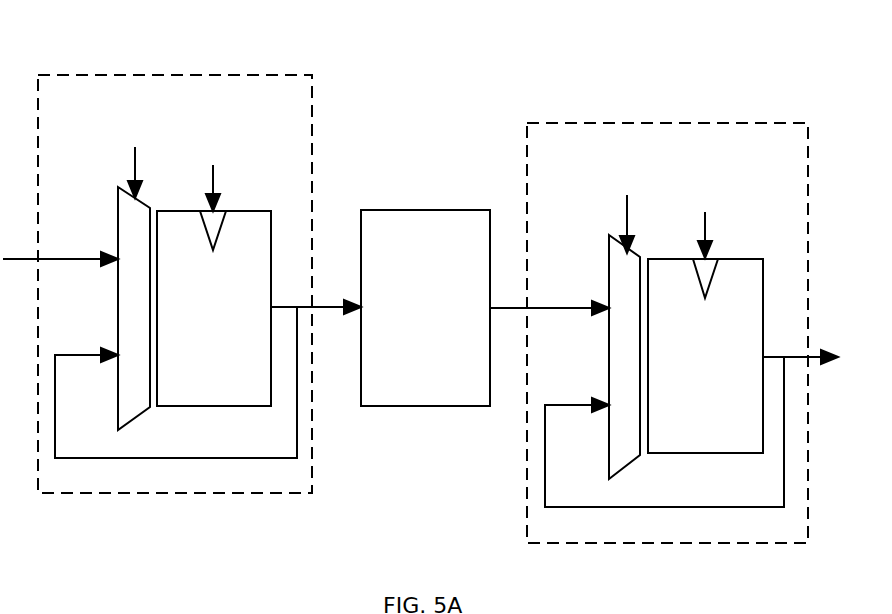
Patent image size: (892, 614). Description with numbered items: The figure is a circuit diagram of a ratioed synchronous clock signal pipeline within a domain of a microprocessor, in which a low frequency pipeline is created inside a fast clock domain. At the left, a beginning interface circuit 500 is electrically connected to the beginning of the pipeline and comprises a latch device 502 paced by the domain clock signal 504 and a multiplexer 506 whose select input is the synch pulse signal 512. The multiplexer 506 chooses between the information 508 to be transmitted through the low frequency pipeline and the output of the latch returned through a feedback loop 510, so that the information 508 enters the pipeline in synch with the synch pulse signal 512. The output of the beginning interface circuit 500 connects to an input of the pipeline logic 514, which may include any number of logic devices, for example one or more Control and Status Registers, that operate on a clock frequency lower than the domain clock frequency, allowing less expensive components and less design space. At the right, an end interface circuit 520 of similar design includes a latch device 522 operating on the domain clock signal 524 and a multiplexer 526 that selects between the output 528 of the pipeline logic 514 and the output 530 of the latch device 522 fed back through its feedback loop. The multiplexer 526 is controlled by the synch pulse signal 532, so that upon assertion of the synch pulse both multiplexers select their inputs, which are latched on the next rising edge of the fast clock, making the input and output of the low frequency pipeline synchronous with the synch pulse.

The beginning interface circuit 500 is at (281, 75).
The latch device 502 is at (214, 308).
The domain clock signal 504 is at (213, 178).
The multiplexer 506 is at (117, 238).
The information 508 is at (108, 263).
The feedback loop 510 is at (105, 359).
The synch pulse signal 512 is at (135, 162).
The pipeline logic 514 is at (425, 308).
The end interface circuit 520 is at (748, 122).
The latch device 522 is at (705, 356).
The domain clock signal 524 is at (705, 225).
The multiplexer 526 is at (608, 286).
The output of the pipeline logic 528 is at (566, 311).
The output of the latch device 530 is at (597, 409).
The synch pulse signal 532 is at (627, 212).